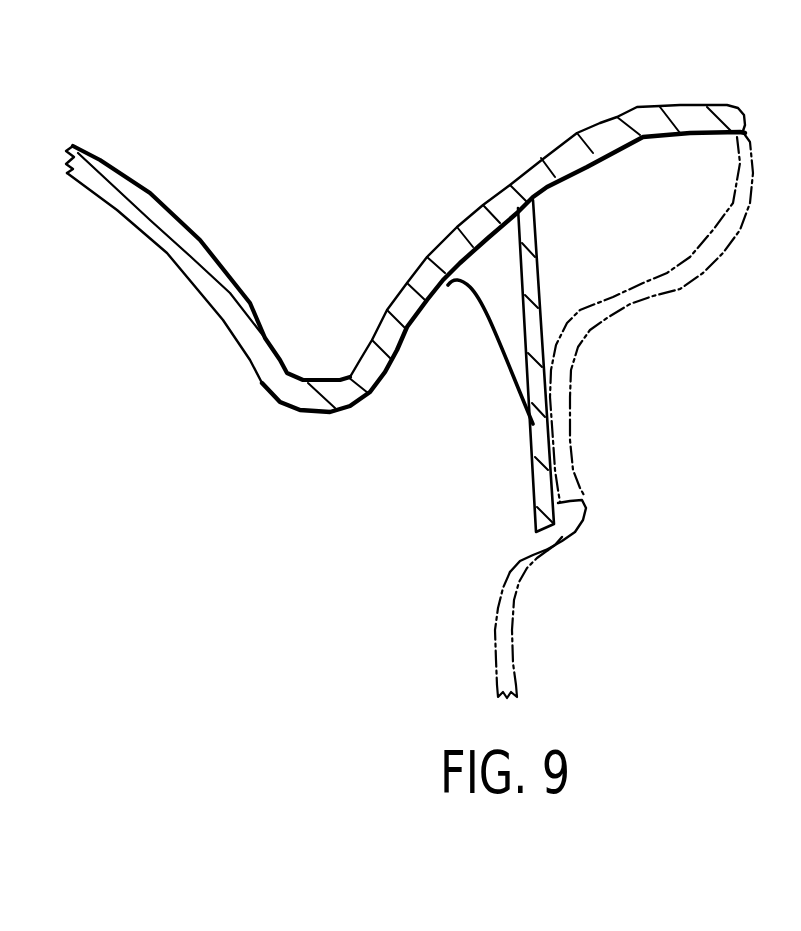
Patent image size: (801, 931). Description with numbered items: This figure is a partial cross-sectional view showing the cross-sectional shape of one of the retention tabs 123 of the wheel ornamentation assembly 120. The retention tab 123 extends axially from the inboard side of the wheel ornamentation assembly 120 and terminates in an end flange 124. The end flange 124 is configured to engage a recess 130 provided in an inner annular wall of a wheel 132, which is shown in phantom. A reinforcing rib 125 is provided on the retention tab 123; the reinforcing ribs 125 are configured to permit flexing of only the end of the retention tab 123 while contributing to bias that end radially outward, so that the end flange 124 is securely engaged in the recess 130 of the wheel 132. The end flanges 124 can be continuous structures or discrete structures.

The wheel ornamentation assembly 120 is at (559, 128).
The retention tab 123 is at (532, 435).
The end flange 124 is at (578, 502).
The reinforcing rib 125 is at (507, 320).
The recess 130 is at (558, 503).
The wheel 132 is at (674, 295).